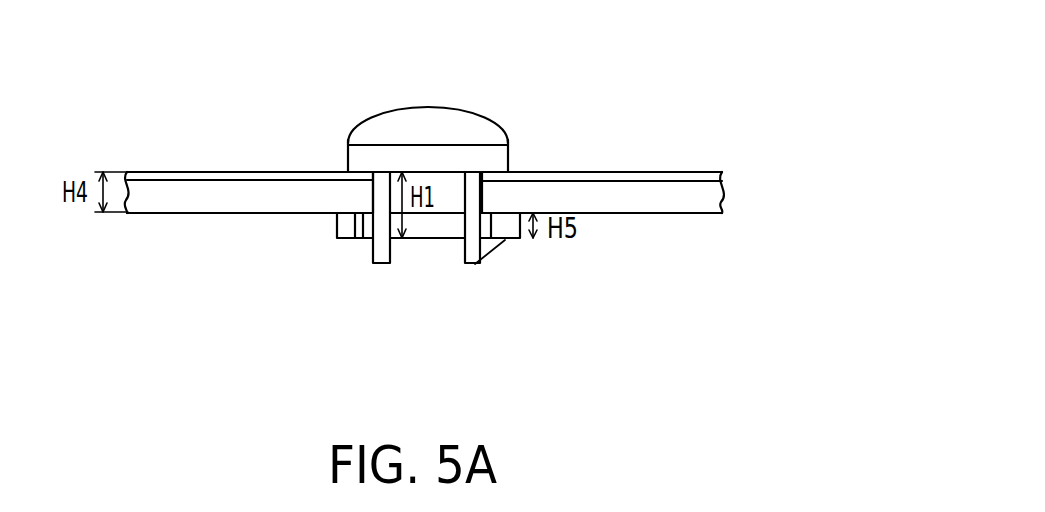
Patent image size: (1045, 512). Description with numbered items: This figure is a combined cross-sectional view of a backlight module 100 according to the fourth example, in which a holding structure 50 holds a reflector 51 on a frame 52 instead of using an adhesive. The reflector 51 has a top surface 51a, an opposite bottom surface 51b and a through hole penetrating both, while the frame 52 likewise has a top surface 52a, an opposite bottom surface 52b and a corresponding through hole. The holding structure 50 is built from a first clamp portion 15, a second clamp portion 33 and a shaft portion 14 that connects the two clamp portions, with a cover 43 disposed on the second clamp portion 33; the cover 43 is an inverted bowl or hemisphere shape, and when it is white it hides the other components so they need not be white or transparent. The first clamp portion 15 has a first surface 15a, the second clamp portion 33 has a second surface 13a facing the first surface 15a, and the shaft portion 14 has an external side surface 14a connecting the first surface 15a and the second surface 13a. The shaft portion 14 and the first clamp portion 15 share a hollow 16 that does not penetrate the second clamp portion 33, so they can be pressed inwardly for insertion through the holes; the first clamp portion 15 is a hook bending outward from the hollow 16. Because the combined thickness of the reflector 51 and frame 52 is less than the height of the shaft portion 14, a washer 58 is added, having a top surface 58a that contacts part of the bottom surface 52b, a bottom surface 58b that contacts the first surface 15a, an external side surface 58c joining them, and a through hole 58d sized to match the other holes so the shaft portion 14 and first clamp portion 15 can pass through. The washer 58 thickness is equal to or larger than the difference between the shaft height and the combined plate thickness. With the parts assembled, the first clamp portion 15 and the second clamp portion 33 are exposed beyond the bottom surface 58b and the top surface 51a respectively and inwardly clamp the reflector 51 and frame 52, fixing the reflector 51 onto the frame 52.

The backlight module 100 is at (760, 33).
The cover 43 is at (430, 118).
The holding structure 50 is at (490, 116).
The second clamp portion 33 is at (497, 170).
The second surface 13a is at (510, 162).
The external side surface 14a is at (505, 188).
The shaft portion 14 is at (483, 204).
The first clamp portion 15 is at (480, 262).
The first surface 15a is at (503, 241).
The hollow 16 is at (423, 245).
The reflector 51 is at (723, 178).
The top surface 51a is at (182, 172).
The bottom surface 51b is at (226, 180).
The frame 52 is at (718, 205).
The top surface 52a is at (203, 213).
The bottom surface 52b is at (249, 213).
The washer 58 is at (524, 243).
The top surface 58a is at (345, 238).
The bottom surface 58b is at (345, 238).
The external side surface 58c is at (335, 224).
The through hole 58d is at (445, 228).